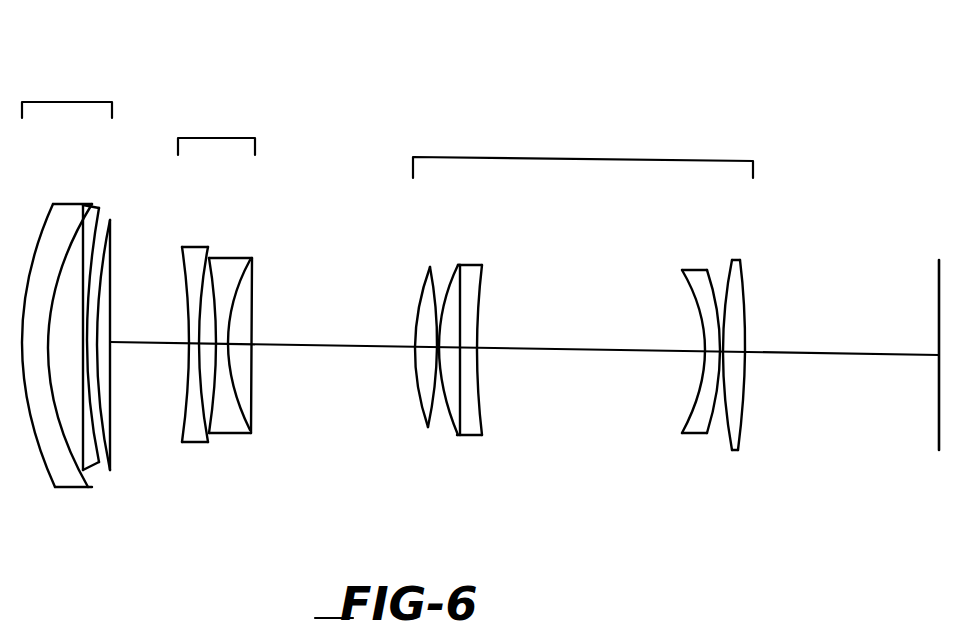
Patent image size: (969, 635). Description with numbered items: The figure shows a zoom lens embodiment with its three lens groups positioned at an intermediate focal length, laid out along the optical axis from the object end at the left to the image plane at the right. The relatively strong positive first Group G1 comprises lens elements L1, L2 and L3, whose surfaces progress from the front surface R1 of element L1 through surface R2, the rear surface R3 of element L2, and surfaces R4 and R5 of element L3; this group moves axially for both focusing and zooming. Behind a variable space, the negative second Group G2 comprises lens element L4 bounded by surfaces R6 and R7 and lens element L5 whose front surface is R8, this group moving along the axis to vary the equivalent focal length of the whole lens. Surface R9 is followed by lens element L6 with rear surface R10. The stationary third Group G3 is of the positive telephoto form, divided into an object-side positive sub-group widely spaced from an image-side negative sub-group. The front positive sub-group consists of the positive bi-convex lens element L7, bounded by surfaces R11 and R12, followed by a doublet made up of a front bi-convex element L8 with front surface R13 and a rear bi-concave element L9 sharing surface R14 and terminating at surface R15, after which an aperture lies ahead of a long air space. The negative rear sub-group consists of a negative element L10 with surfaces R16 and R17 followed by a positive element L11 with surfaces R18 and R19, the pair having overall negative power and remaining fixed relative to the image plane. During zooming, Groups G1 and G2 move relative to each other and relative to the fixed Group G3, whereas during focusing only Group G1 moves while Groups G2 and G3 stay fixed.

The lens element L1 is at (60, 350).
The lens element L2 is at (118, 341).
The lens element L3 is at (130, 321).
The lens element L4 is at (181, 339).
The lens element L5 is at (252, 339).
The lens element L6 is at (290, 326).
The positive bi-convex lens element L7 is at (403, 347).
The bi-convex element L8 is at (460, 352).
The bi-concave element L9 is at (505, 347).
The negative element L10 is at (678, 351).
The positive element L11 is at (763, 361).
The lens surface radius R1 is at (47, 469).
The lens surface radius R2 is at (82, 458).
The lens surface radius R3 is at (98, 460).
The lens surface radius R4 is at (100, 445).
The lens surface radius R5 is at (108, 420).
The lens surface radius R6 is at (189, 395).
The lens surface radius R7 is at (201, 420).
The lens surface radius R8 is at (213, 405).
The lens surface radius R9 is at (240, 410).
The lens surface radius R10 is at (252, 392).
The lens surface radius R11 is at (417, 393).
The lens surface radius R12 is at (425, 413).
The lens surface radius R13 is at (449, 417).
The lens surface radius R14 is at (462, 417).
The lens surface radius R15 is at (480, 400).
The lens surface radius R16 is at (695, 407).
The lens surface radius R17 is at (710, 417).
The lens surface radius R18 is at (725, 423).
The lens surface radius R19 is at (747, 410).
The first Group G1 is at (92, 308).
The second Group G2 is at (239, 296).
The third Group G3 is at (591, 316).